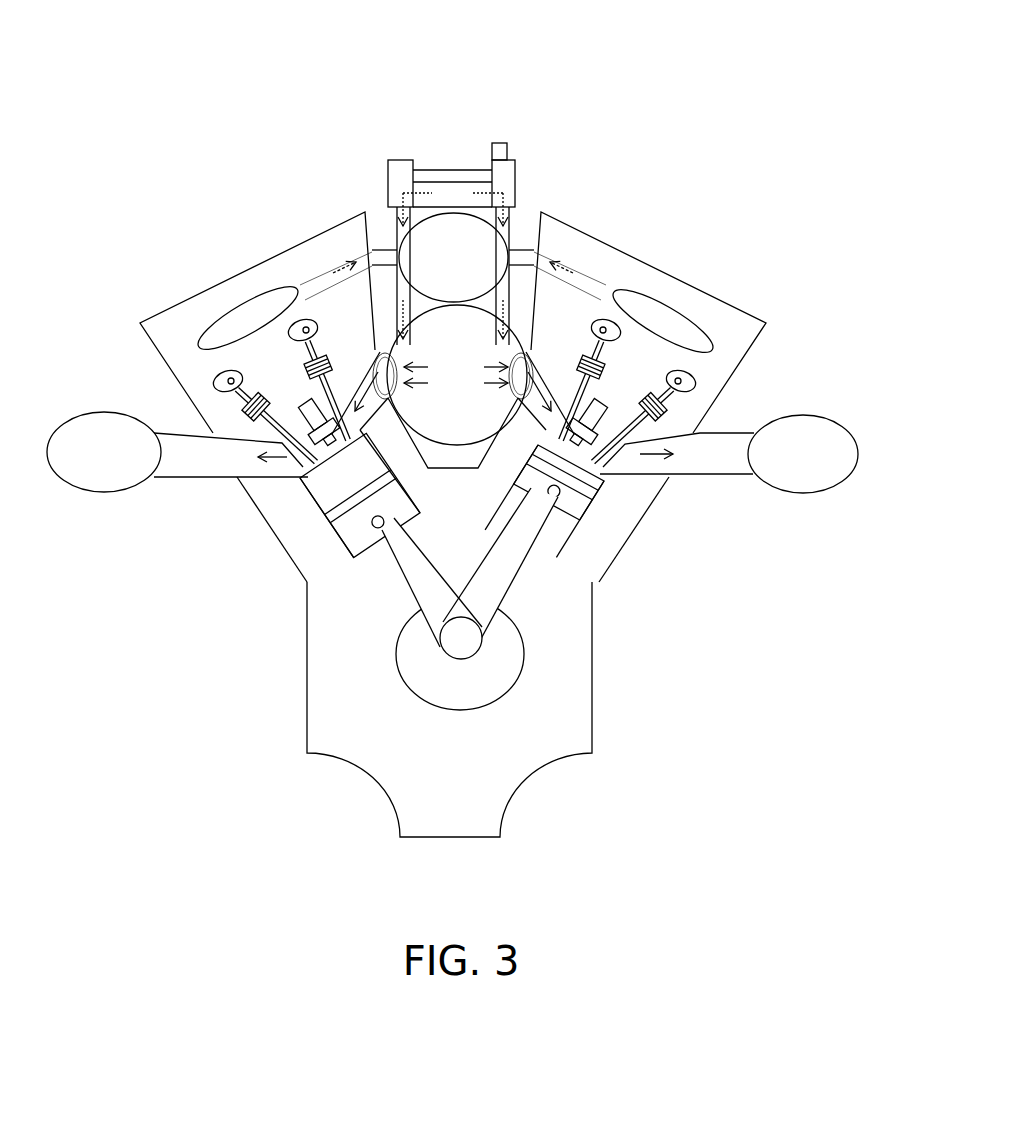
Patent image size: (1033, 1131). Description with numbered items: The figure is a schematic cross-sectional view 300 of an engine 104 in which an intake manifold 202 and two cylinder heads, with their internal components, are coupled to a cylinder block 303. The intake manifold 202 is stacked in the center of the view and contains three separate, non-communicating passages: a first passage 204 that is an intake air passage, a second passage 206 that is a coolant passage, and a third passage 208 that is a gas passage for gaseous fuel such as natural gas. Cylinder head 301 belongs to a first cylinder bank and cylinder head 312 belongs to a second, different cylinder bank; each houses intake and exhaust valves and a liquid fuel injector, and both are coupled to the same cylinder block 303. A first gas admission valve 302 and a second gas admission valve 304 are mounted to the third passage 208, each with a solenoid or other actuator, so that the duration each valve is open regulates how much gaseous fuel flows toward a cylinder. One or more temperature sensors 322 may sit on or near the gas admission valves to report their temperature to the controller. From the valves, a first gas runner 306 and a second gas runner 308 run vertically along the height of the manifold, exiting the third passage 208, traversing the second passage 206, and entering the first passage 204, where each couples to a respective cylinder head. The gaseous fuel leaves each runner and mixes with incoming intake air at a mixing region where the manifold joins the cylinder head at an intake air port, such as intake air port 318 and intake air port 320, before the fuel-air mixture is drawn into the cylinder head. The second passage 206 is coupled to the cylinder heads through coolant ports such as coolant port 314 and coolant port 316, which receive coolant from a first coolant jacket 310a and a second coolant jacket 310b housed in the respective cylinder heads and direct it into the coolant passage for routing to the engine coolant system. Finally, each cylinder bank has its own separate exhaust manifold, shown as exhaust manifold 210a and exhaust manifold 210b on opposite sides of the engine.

The schematic cross-sectional view 300 is at (681, 55).
The engine 104 is at (661, 184).
The intake manifold 202 is at (462, 171).
The first passage 204 is at (457, 375).
The second passage 206 is at (453, 257).
The third passage 208 is at (453, 193).
The exhaust manifold 210a is at (177, 452).
The exhaust manifold 210b is at (729, 454).
The cylinder head 301 is at (180, 318).
The first gas admission valve 302 is at (400, 160).
The cylinder block 303 is at (585, 727).
The second gas admission valve 304 is at (509, 162).
The first gas runner 306 is at (396, 240).
The second gas runner 308 is at (513, 240).
The first coolant jacket 310a is at (248, 318).
The second coolant jacket 310b is at (663, 321).
The cylinder head 312 is at (712, 316).
The coolant port 314 is at (373, 242).
The coolant port 316 is at (518, 243).
The intake air port 318 is at (376, 362).
The intake air port 320 is at (532, 362).
The temperature sensor 322 is at (496, 143).